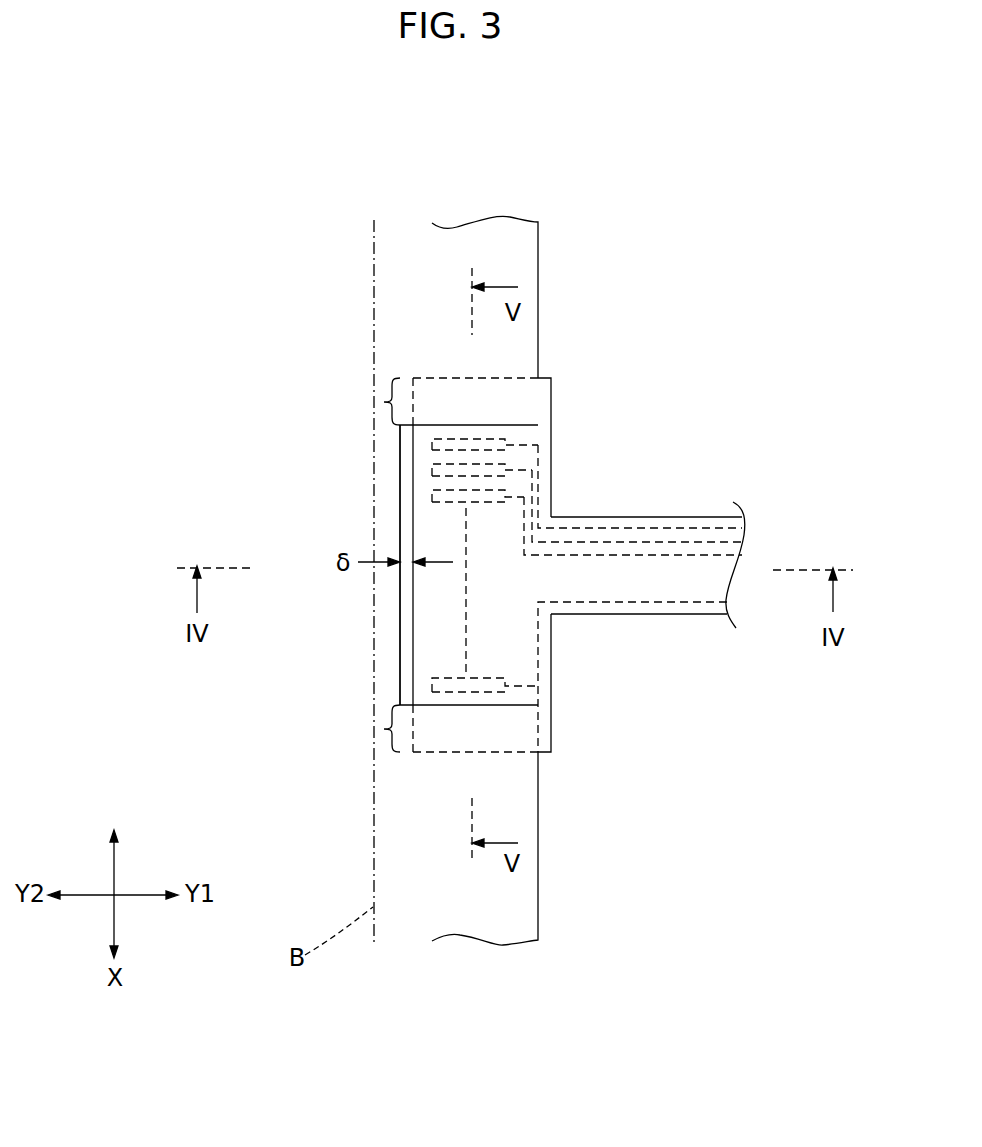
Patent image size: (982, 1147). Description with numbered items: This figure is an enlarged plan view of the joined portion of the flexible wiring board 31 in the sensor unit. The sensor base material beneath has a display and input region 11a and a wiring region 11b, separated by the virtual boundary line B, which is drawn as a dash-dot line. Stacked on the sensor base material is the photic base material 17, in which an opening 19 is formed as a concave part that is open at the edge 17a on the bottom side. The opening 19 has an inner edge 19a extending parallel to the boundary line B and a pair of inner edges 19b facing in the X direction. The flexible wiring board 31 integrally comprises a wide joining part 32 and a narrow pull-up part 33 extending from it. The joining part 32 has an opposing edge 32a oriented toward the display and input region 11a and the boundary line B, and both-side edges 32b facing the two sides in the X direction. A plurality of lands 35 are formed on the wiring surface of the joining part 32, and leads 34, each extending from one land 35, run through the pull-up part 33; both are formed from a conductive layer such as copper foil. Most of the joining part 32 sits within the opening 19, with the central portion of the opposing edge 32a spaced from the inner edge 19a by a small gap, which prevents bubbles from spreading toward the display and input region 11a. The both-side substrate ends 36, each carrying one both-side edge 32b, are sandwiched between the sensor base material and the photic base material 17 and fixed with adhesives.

The display and input region 11a is at (310, 244).
The wiring region 11b is at (408, 236).
The photic base material 17 is at (515, 923).
The edge 17a is at (538, 852).
The opening 19 is at (522, 695).
The inner edge 19a is at (404, 511).
The inner edges 19b is at (480, 425).
The flexible wiring board 31 is at (684, 621).
The joining part 32 is at (442, 638).
The opposing edge 32a is at (413, 605).
The both-side edges 32b is at (513, 377).
The pull-up part 33 is at (700, 517).
The leads 34 is at (635, 542).
The lands 35 is at (512, 492).
The both-side substrate ends 36 is at (373, 402).